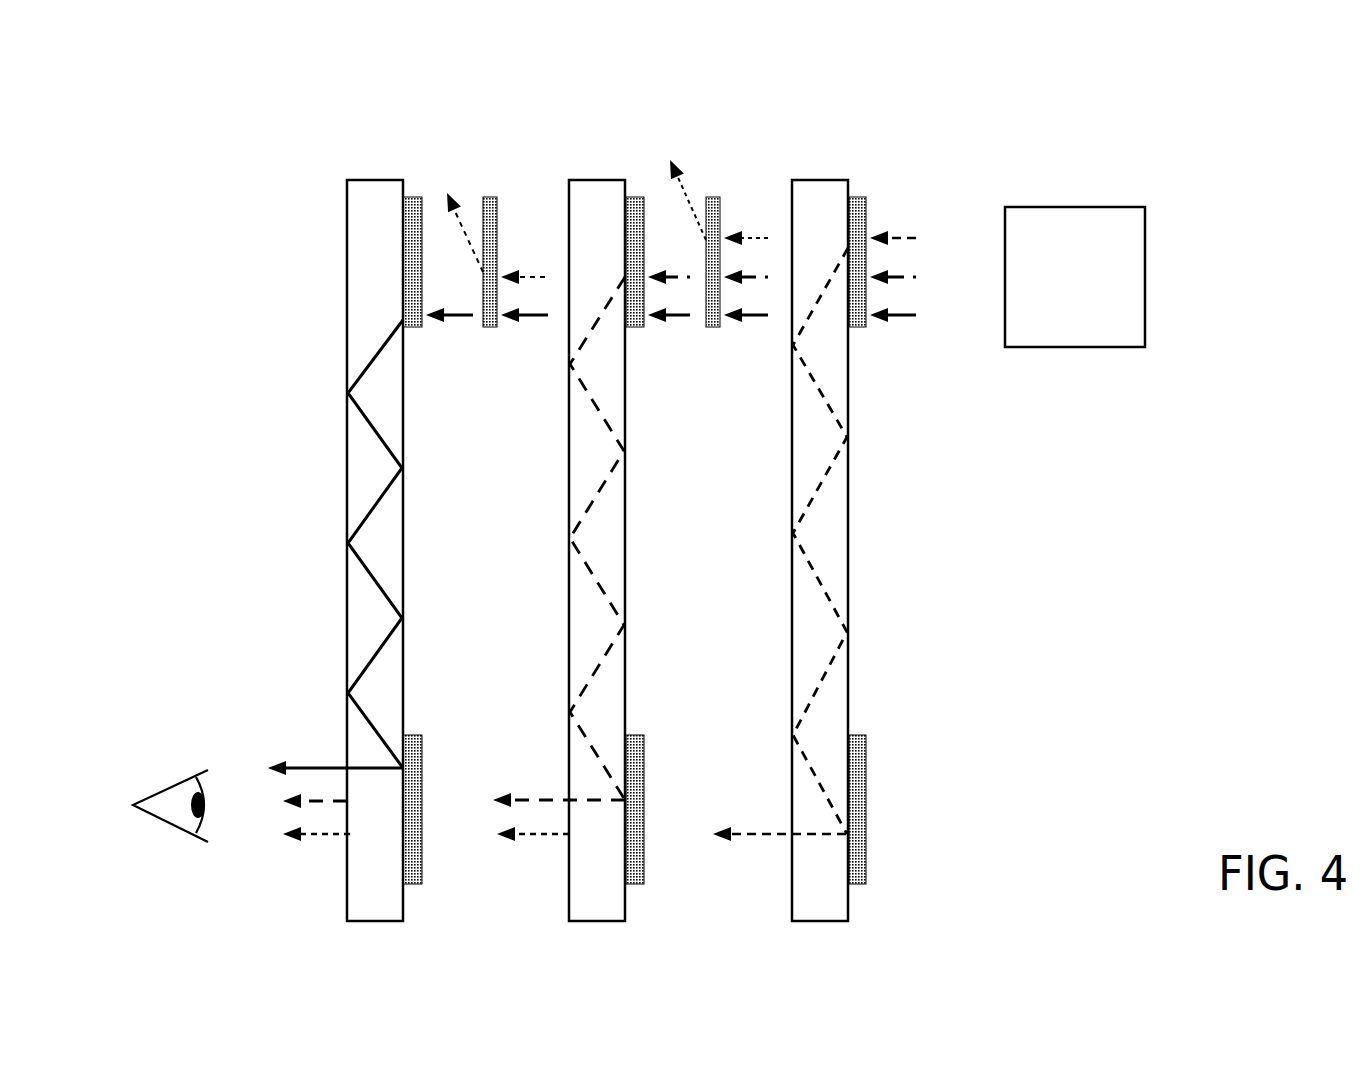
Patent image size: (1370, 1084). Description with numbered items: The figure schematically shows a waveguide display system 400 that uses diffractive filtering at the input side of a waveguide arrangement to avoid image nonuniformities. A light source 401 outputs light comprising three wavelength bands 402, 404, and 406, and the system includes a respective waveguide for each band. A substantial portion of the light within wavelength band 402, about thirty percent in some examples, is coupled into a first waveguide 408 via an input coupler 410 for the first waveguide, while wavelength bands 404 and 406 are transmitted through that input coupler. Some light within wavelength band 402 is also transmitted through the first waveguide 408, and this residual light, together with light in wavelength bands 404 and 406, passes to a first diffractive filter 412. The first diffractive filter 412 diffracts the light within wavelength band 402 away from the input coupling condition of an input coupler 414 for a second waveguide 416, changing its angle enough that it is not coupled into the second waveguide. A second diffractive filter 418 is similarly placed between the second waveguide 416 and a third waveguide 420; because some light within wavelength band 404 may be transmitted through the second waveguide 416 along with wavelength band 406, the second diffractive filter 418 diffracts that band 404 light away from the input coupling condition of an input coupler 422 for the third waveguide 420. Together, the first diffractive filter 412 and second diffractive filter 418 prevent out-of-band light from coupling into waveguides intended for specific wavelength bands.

The waveguide display system 400 is at (522, 42).
The light source 401 is at (1055, 317).
The first wavelength band 402 is at (913, 228).
The second wavelength band 404 is at (913, 265).
The third wavelength band 406 is at (913, 303).
The first waveguide 408 is at (818, 180).
The input coupler for the first waveguide 410 is at (858, 197).
The first diffractive filter 412 is at (713, 197).
The input coupler for the second waveguide 414 is at (634, 197).
The second waveguide 416 is at (594, 180).
The second diffractive filter 418 is at (490, 197).
The third waveguide 420 is at (367, 180).
The input coupler for the third waveguide 422 is at (408, 197).